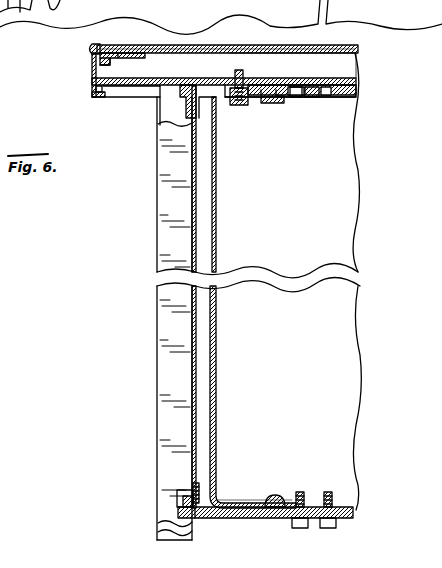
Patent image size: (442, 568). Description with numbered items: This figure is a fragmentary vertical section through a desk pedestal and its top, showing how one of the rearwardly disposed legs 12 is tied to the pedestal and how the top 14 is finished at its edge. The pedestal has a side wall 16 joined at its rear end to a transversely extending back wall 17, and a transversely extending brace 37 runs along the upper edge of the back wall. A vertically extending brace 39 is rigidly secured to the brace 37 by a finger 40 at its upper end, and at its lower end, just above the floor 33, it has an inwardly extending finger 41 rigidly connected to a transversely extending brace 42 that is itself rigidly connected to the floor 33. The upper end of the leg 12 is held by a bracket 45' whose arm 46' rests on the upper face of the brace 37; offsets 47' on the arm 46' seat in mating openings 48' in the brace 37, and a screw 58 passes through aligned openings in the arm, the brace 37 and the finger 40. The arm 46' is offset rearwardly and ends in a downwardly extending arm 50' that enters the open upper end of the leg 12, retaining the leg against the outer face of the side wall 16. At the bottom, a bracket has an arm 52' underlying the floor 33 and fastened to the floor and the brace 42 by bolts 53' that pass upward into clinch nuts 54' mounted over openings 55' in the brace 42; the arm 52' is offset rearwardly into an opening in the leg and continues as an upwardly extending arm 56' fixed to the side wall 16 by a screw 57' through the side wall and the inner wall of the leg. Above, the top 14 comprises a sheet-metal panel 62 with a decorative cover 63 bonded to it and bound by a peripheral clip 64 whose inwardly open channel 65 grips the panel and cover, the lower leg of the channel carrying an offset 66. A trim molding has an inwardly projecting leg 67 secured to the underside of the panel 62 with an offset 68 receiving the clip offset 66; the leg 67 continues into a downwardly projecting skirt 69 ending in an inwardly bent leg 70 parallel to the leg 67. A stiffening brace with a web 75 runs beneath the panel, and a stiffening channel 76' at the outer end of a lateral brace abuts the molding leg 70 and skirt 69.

The rearwardly disposed leg 12 is at (160, 385).
The top 14 is at (300, 45).
The side wall 16 is at (218, 350).
The back wall 17 is at (350, 218).
The floor 33 is at (354, 514).
The brace 37 is at (357, 90).
The vertically extending brace 39 is at (218, 223).
The finger 40 is at (251, 100).
The inwardly extending finger 41 is at (249, 500).
The brace 42 is at (355, 505).
The bracket 45' is at (315, 117).
The arm 46' is at (302, 111).
The offset 47' is at (294, 110).
The opening 48' is at (272, 108).
The downwardly extending arm 50' is at (160, 106).
The arm 52' is at (270, 519).
The bolt 53' is at (314, 520).
The clinch nut 54' is at (317, 482).
The opening 55' is at (340, 486).
The upwardly extending arm 56' is at (159, 487).
The screw 57' is at (155, 504).
The screw 58 is at (243, 72).
The sheet-metal panel 62 is at (330, 53).
The decorative cover 63 is at (358, 48).
The clip 64 is at (91, 46).
The channel 65 is at (92, 50).
The offset 66 is at (105, 52).
The leg 67 is at (143, 49).
The offset 68 is at (110, 62).
The skirt 69 is at (92, 72).
The inwardly bent leg 70 is at (99, 97).
The web 75 is at (200, 75).
The stiffening channel 76' is at (75, 108).